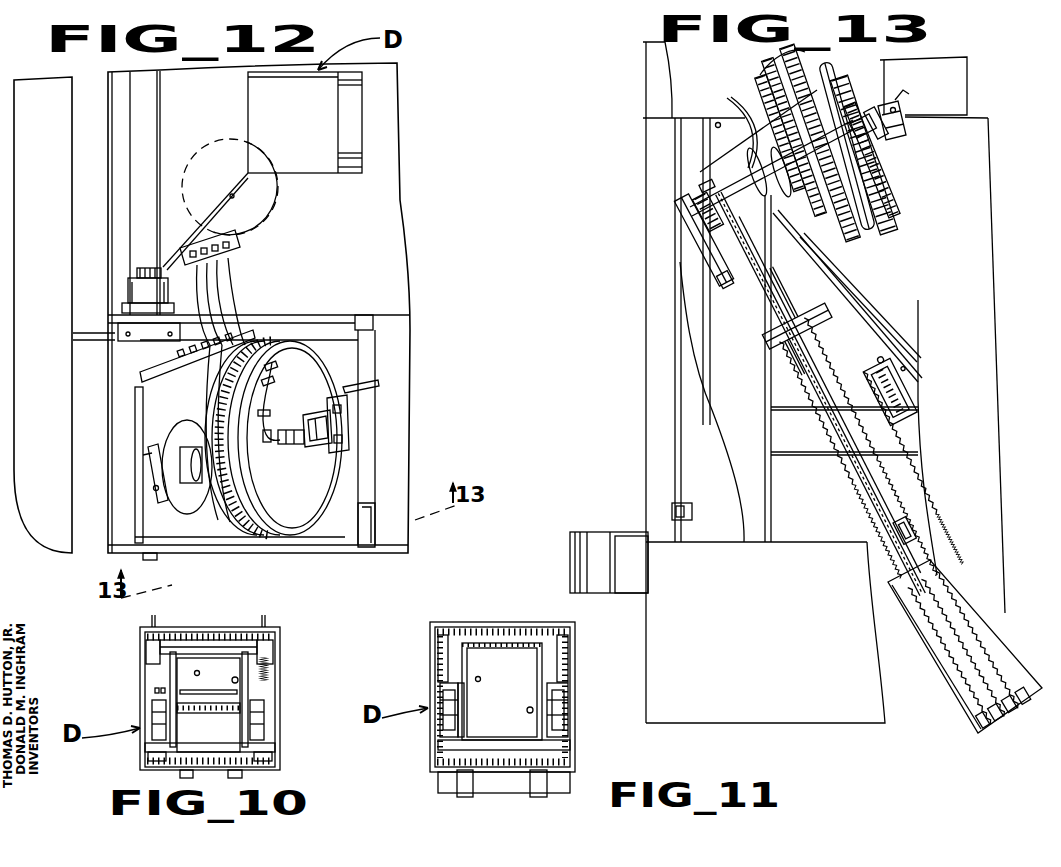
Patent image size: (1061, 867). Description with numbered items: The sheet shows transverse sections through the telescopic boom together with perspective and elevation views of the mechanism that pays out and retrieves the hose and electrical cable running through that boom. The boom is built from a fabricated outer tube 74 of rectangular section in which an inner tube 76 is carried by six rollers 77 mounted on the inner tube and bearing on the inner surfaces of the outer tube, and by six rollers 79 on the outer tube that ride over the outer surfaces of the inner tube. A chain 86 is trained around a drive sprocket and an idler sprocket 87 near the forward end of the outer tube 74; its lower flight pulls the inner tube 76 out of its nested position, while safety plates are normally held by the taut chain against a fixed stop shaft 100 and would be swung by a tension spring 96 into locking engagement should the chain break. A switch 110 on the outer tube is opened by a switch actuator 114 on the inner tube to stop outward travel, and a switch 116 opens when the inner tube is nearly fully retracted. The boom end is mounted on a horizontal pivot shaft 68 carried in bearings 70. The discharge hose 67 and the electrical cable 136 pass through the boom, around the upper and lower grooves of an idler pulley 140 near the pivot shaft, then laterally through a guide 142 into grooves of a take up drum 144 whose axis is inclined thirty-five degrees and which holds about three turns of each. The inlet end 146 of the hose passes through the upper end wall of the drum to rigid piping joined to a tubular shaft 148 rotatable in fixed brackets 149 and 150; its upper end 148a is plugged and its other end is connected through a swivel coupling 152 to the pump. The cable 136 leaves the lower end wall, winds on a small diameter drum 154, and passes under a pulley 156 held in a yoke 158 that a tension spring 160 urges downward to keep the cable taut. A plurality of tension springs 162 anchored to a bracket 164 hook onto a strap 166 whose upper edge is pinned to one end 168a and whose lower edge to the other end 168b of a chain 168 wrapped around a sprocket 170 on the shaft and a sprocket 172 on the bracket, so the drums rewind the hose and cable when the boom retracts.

In FIG. 12, the discharge hose 67 is at (232, 270).
In FIG. 10, the discharge hose 67 is at (238, 681).
In FIG. 11, the discharge hose 67 is at (528, 708).
In FIG. 13, the discharge hose 67 is at (885, 213).
In FIG. 12, the horizontal pivot shaft 68 is at (148, 272).
In FIG. 12, the bearings 70 is at (140, 292).
In FIG. 12, the outer tube 74 is at (352, 118).
In FIG. 10, the outer tube 74 is at (278, 648).
In FIG. 11, the outer tube 74 is at (480, 624).
In FIG. 10, the inner tube 76 is at (172, 670).
In FIG. 11, the inner tube 76 is at (502, 646).
In FIG. 10, the rollers 77 is at (255, 640).
In FIG. 11, the rollers 79 is at (555, 712).
In FIG. 10, the chain 86 is at (152, 688).
In FIG. 11, the chain 86 is at (452, 688).
In FIG. 11, the idler sprocket 87 is at (460, 712).
In FIG. 10, the tension spring 96 is at (265, 672).
In FIG. 10, the fixed stop shaft 100 is at (226, 718).
In FIG. 11, the switch 110 is at (562, 655).
In FIG. 11, the switch actuator 114 is at (565, 697).
In FIG. 11, the switch 116 is at (440, 655).
In FIG. 12, the electrical cable 136 is at (208, 303).
In FIG. 10, the electrical cable 136 is at (197, 675).
In FIG. 11, the electrical cable 136 is at (482, 679).
In FIG. 13, the electrical cable 136 is at (760, 75).
In FIG. 12, the idler pulley 140 is at (263, 194).
In FIG. 12, the guide 142 is at (240, 240).
In FIG. 12, the take up drum 144 is at (295, 386).
In FIG. 13, the take up drum 144 is at (872, 170).
In FIG. 12, the inlet end 146 is at (280, 362).
In FIG. 12, the tubular shaft 148 is at (302, 446).
In FIG. 13, the tubular shaft 148 is at (882, 138).
In FIG. 12, the upper end of shaft 148a is at (349, 410).
In FIG. 13, the upper end of shaft 148a is at (897, 100).
In FIG. 12, the fixed bracket 149 is at (153, 478).
In FIG. 13, the fixed bracket 149 is at (702, 186).
In FIG. 12, the fixed bracket 150 is at (332, 429).
In FIG. 13, the fixed bracket 150 is at (903, 115).
In FIG. 13, the swivel coupling 152 is at (704, 240).
In FIG. 12, the small diameter drum 154 is at (190, 495).
In FIG. 13, the small diameter drum 154 is at (732, 110).
In FIG. 13, the pulley 156 is at (884, 362).
In FIG. 13, the yoke 158 is at (910, 418).
In FIG. 13, the tension spring 160 is at (915, 440).
In FIG. 13, the tension springs 162 is at (905, 472).
In FIG. 13, the bracket 164 is at (988, 735).
In FIG. 13, the strap 166 is at (771, 332).
In FIG. 13, the chain 168 is at (850, 470).
In FIG. 13, the chain end 168a is at (784, 313).
In FIG. 13, the chain end 168b is at (793, 350).
In FIG. 13, the sprocket 170 is at (698, 210).
In FIG. 13, the sprocket 172 is at (915, 530).